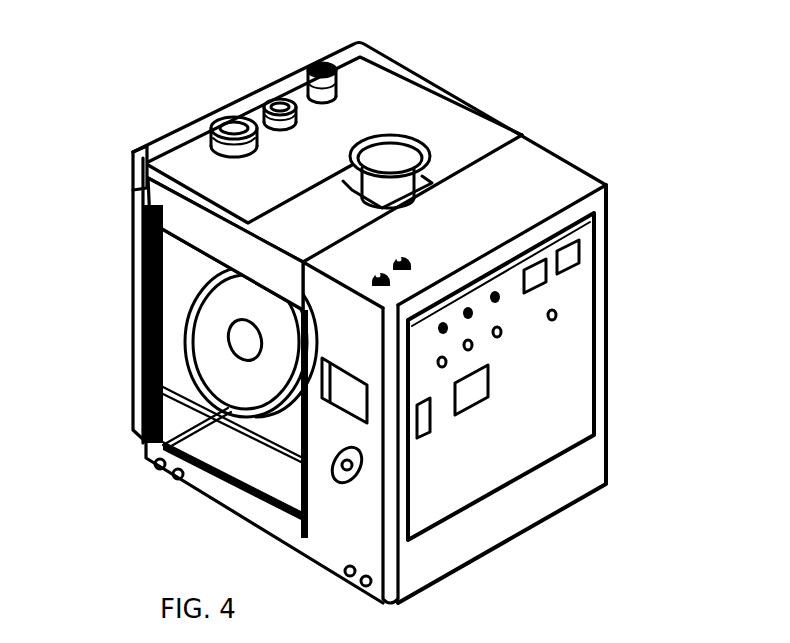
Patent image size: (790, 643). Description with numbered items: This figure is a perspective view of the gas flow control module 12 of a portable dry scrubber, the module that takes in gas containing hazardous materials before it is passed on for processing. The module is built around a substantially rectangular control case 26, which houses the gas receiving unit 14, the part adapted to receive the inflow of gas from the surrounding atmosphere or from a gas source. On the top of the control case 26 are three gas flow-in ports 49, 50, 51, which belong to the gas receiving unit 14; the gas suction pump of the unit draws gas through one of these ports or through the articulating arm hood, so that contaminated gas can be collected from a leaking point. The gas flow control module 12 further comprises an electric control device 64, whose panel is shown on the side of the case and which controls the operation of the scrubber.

The gas flow control module 12 is at (618, 128).
The gas receiving unit 14 is at (186, 344).
The control case 26 is at (607, 352).
The gas flow-in port 49 is at (229, 116).
The gas flow-in port 50 is at (283, 98).
The gas flow-in port 51 is at (328, 54).
The electric control device 64 is at (572, 454).